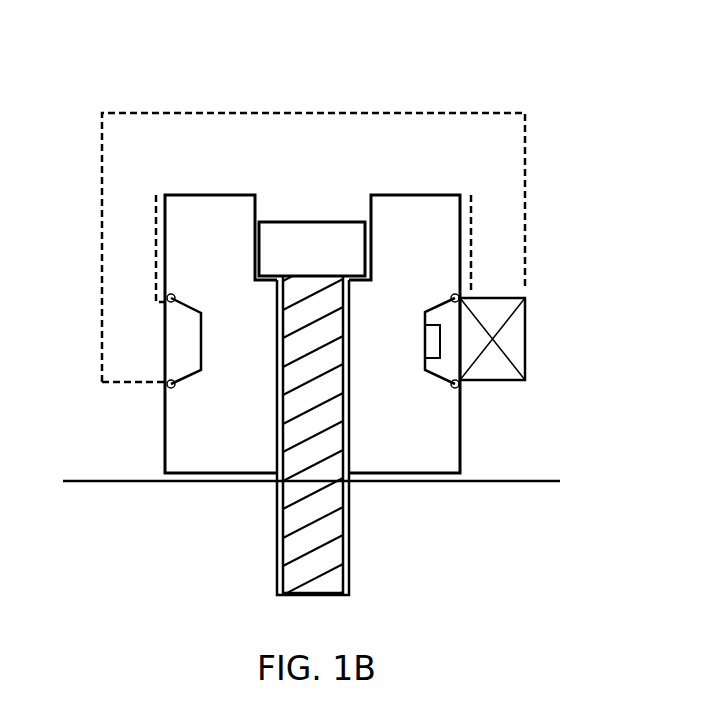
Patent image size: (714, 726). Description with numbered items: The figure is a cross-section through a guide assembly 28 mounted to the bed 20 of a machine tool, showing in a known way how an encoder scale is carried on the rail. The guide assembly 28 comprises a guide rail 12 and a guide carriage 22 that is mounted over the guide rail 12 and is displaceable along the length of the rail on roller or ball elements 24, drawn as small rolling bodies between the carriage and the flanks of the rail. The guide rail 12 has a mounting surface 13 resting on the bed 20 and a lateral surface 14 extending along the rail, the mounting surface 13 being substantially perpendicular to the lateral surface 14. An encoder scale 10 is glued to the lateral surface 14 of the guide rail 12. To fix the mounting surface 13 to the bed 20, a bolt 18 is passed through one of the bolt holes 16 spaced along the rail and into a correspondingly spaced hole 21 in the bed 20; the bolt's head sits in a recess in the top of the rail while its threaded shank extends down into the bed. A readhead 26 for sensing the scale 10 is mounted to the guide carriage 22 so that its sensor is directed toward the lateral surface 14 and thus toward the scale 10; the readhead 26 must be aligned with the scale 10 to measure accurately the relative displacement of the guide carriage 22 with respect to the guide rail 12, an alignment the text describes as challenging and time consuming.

The guide assembly 28 is at (583, 80).
The guide carriage 22 is at (123, 155).
The guide rail 12 is at (447, 222).
The bolt holes 16 is at (371, 205).
The bolts 18 is at (284, 238).
The holes 21 is at (277, 558).
The bed 20 is at (172, 520).
The mounting surface 13 is at (440, 482).
The lateral surface 14 is at (425, 366).
The encoder scale 10 is at (432, 340).
The roller or ball elements 24 is at (165, 298).
The readhead 26 is at (515, 338).